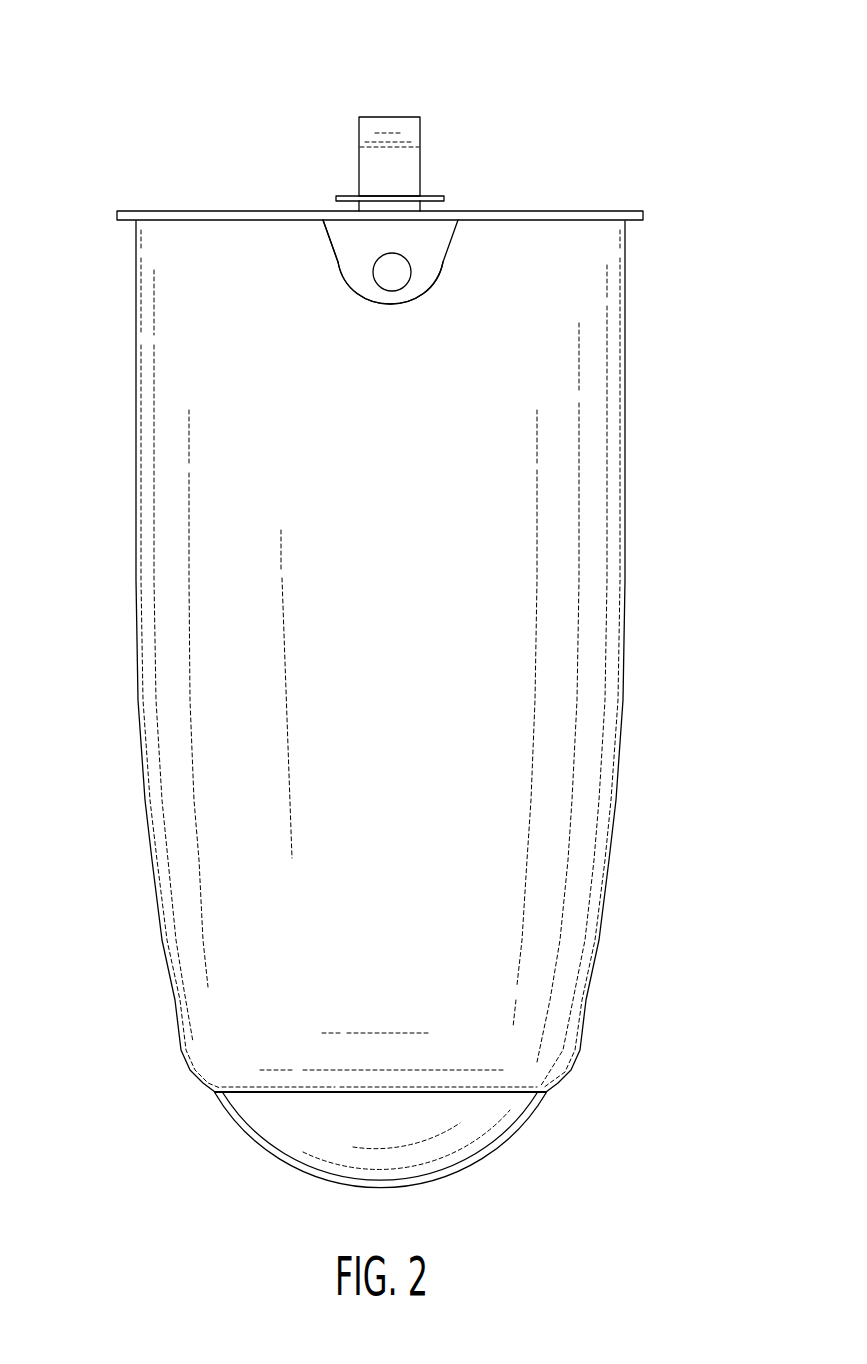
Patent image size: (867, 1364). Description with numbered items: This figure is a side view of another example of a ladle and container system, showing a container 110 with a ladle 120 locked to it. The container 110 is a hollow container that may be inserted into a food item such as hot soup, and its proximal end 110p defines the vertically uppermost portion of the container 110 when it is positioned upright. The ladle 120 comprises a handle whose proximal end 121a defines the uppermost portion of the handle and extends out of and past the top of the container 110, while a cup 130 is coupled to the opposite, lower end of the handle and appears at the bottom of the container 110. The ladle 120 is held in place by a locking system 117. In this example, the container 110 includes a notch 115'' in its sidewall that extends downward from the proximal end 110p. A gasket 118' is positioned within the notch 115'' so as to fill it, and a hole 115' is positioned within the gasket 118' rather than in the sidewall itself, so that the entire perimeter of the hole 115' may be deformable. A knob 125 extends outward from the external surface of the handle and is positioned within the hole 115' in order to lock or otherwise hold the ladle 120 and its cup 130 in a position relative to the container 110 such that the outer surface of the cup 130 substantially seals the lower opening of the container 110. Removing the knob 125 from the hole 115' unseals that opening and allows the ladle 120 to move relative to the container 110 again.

The container 110 is at (578, 242).
The proximal end 110p is at (203, 208).
The hole 115' is at (544, 297).
The notch 115'' is at (292, 207).
The locking system 117 is at (400, 357).
The gasket 118' is at (249, 289).
The ladle 120 is at (423, 110).
The proximal end 121a is at (408, 143).
The knob 125 is at (393, 268).
The cup 130 is at (440, 1165).